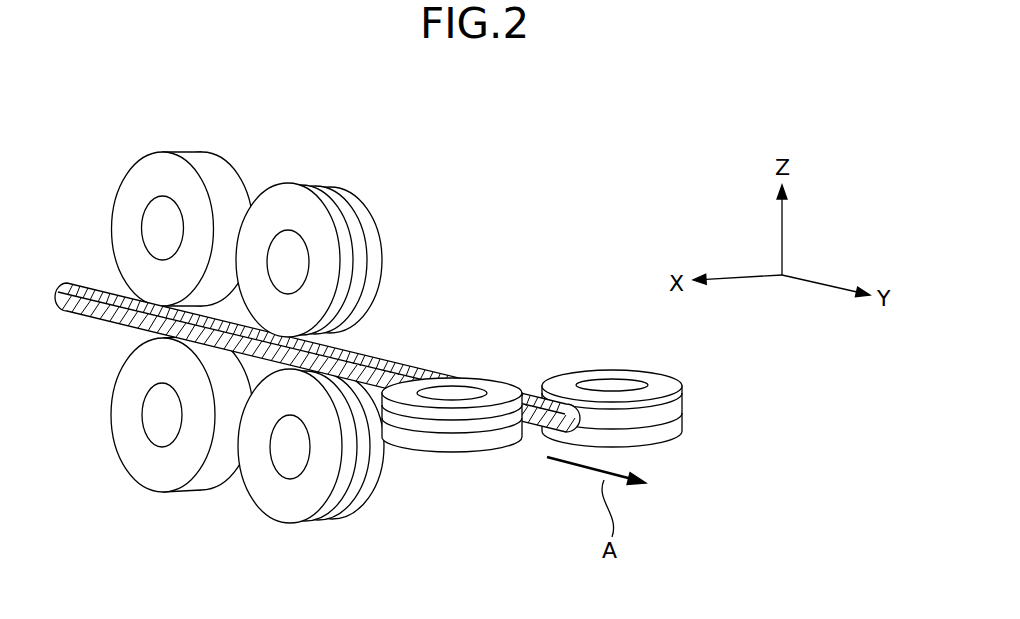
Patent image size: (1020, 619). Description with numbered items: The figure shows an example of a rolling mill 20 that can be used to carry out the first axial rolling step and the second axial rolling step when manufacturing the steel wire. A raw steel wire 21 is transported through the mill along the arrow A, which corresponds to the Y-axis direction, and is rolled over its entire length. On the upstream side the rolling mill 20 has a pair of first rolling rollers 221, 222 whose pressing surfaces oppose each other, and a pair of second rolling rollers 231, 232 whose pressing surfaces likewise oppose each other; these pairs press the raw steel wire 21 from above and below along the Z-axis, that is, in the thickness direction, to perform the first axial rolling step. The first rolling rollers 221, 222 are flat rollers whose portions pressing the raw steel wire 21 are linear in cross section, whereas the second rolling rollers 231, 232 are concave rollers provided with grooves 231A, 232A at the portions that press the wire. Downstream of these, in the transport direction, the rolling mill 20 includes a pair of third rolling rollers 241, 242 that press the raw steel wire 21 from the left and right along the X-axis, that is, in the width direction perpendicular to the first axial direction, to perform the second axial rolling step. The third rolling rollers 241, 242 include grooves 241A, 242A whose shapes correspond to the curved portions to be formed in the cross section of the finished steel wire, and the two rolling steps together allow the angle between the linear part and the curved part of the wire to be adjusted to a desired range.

The rolling mill 20 is at (628, 126).
The raw steel wire 21 is at (62, 284).
The first rolling roller 221 is at (222, 170).
The first rolling roller 222 is at (148, 478).
The second rolling roller 231 is at (350, 195).
The groove 231A is at (362, 257).
The second rolling roller 232 is at (283, 503).
The groove 232A is at (347, 500).
The third rolling roller 241 is at (660, 383).
The groove 241A is at (663, 418).
The third rolling roller 242 is at (515, 438).
The groove 242A is at (463, 436).